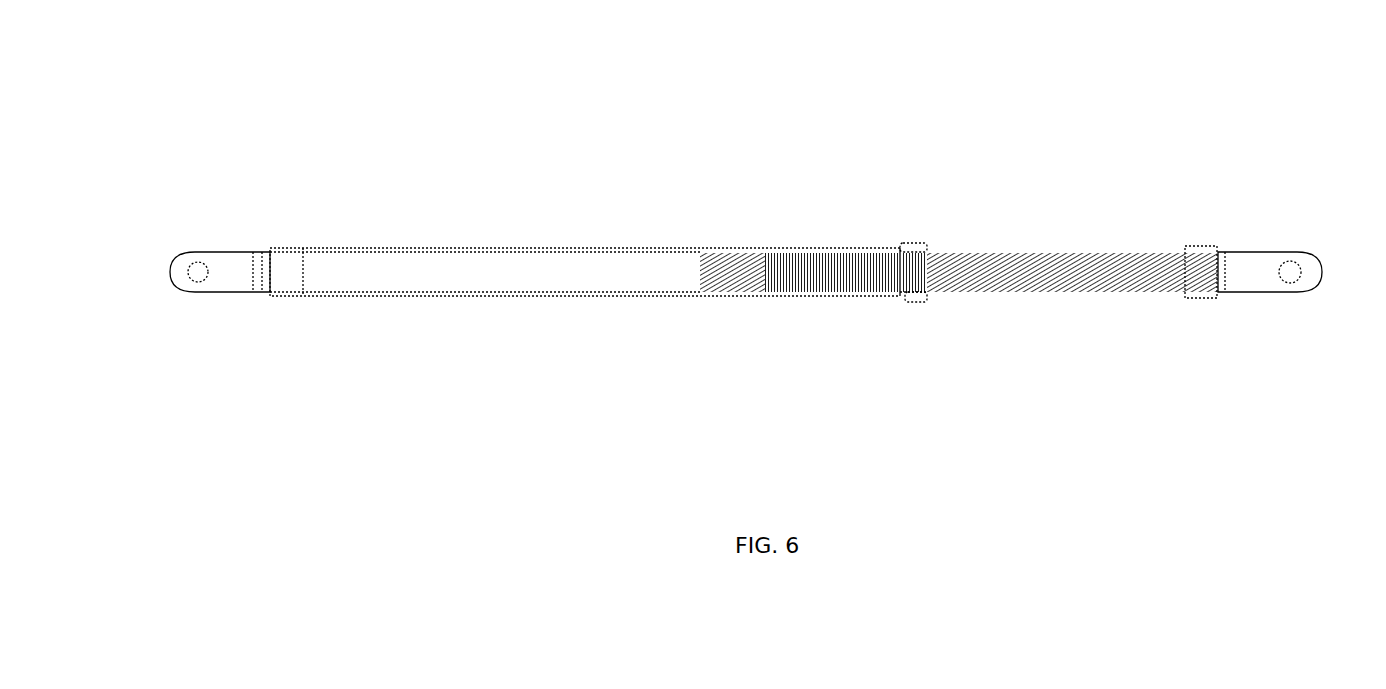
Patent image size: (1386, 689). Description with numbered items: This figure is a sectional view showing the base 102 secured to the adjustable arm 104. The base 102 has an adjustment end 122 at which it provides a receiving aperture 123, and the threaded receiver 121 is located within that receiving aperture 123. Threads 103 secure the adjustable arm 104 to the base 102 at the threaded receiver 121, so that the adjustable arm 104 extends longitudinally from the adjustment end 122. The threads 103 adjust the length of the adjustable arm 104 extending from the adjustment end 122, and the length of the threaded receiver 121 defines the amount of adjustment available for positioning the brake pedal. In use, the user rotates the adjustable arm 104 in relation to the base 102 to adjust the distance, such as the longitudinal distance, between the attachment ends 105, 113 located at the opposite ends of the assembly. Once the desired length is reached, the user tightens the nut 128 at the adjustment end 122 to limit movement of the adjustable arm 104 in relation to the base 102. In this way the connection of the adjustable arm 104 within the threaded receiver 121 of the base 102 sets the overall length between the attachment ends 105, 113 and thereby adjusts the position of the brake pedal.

The base 102 is at (436, 252).
The threads 103 is at (1100, 296).
The adjustable arm 104 is at (1033, 253).
The attachment end 105 is at (1305, 252).
The attachment end 113 is at (175, 253).
The threaded receiver 121 is at (713, 250).
The adjustment end 122 is at (897, 248).
The receiving aperture 123 is at (888, 303).
The nut 128 is at (913, 303).